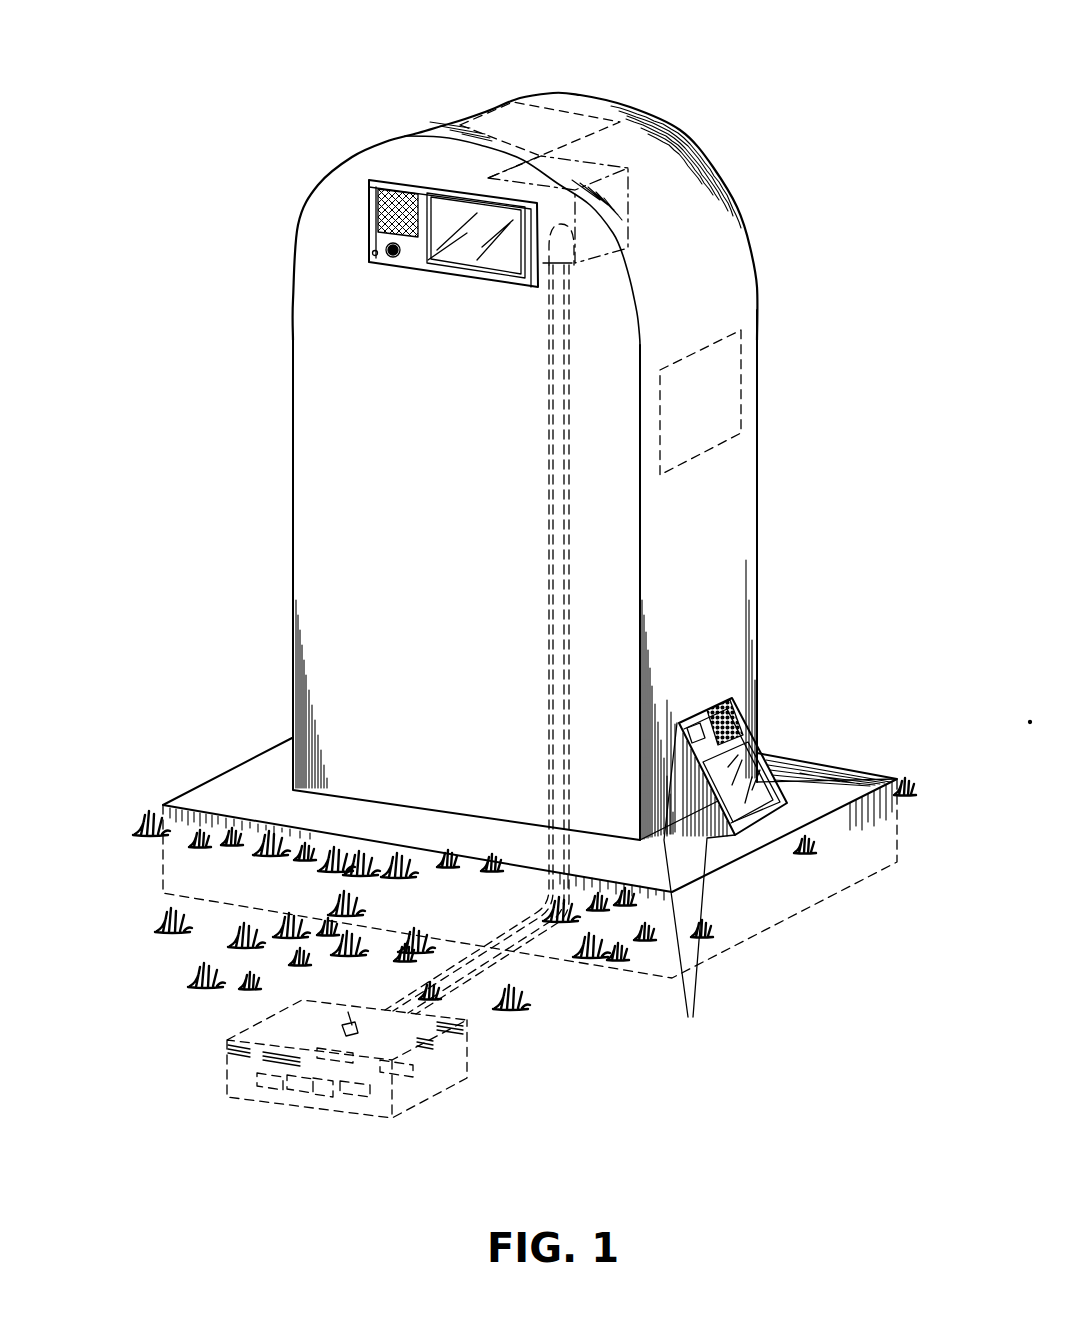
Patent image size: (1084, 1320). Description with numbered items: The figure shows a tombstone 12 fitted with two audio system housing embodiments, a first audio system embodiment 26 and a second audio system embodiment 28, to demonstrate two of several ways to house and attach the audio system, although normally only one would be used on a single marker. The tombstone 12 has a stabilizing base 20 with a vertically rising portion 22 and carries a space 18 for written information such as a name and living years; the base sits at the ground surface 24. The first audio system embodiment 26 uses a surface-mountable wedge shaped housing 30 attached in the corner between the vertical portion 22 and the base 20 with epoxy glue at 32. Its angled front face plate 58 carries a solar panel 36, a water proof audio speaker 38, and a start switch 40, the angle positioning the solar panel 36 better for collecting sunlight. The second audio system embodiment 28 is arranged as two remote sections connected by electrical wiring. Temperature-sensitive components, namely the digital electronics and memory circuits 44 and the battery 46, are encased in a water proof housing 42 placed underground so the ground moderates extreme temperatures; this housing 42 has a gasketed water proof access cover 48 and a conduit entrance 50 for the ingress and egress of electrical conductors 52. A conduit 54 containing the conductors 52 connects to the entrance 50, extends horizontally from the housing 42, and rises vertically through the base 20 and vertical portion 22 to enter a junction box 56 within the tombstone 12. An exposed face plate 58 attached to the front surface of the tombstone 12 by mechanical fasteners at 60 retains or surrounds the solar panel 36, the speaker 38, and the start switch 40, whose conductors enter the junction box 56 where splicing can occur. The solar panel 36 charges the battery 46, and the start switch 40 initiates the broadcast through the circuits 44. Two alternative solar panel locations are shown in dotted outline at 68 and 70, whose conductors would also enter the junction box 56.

The tombstone 12 is at (738, 207).
The space for written information 18 is at (360, 400).
The stabilizing base 20 is at (828, 793).
The vertically rising portion 22 is at (733, 478).
The ground surface 24 is at (160, 805).
The first audio system embodiment 26 is at (760, 718).
The second audio system embodiment 28 is at (428, 180).
The wedge shaped housing 30 is at (718, 817).
The epoxy glue 32 is at (699, 893).
The solar panel 36 is at (470, 262).
The water proof audio speaker 38 is at (386, 200).
The start switch 40 is at (386, 250).
The water proof housing 42 is at (243, 1102).
The digital electronics and memory circuits 44 is at (350, 1098).
The battery 46 is at (407, 1065).
The water proof access cover 48 is at (272, 1025).
The conduit entrance 50 is at (350, 1030).
The electrical conductors 52 is at (468, 973).
The conduit 54 is at (448, 985).
The junction box 56 is at (628, 178).
The face plate 58 is at (375, 182).
The mechanical fasteners 60 is at (372, 180).
The alternative solar panel location 68 is at (538, 113).
The alternative solar panel location 70 is at (723, 368).